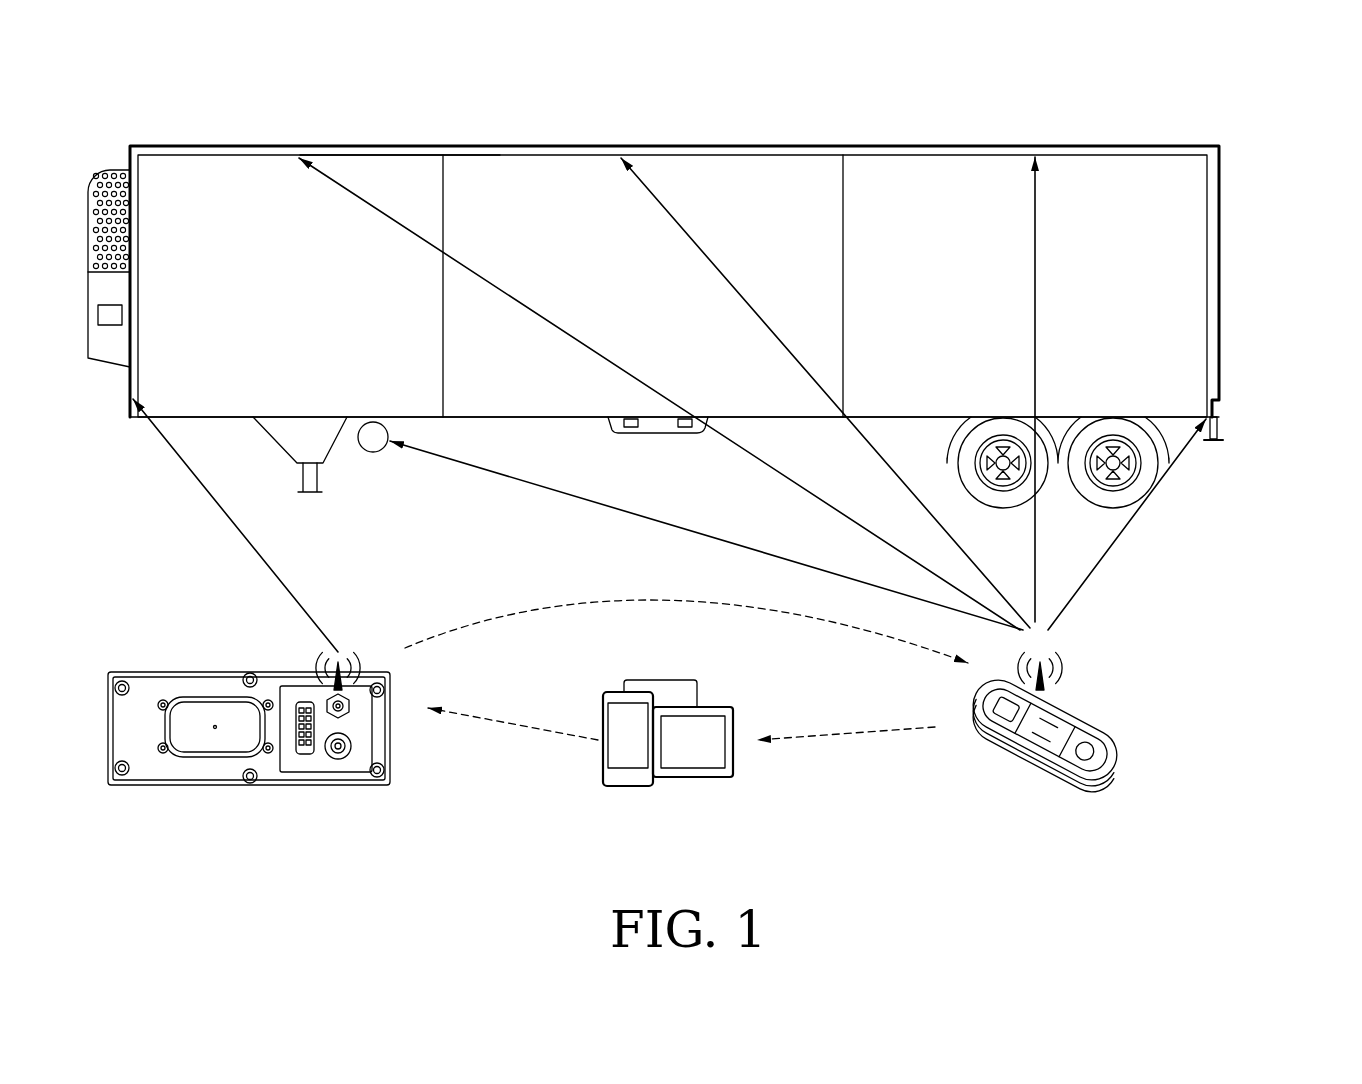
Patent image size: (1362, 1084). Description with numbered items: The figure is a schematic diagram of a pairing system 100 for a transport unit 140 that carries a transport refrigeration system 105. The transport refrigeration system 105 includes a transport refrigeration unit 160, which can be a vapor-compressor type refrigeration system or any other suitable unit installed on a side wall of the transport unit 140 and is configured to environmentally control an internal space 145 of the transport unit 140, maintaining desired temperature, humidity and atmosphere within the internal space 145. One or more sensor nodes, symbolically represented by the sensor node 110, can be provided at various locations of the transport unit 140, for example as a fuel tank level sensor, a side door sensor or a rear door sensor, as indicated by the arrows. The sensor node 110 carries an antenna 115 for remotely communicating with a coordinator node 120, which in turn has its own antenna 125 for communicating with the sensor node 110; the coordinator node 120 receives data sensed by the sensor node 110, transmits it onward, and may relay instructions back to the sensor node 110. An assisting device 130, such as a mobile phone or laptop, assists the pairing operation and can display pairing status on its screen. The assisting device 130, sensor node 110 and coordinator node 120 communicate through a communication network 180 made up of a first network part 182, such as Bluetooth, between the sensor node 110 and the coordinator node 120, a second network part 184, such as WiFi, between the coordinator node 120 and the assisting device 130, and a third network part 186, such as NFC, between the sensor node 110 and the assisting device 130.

The pairing system 100 is at (1280, 98).
The transport refrigeration system 105 is at (661, 124).
The sensor node 110 is at (1125, 732).
The antenna 115 is at (1072, 655).
The coordinator node 120 is at (199, 787).
The antenna 125 is at (360, 650).
The assisting device 130 is at (690, 780).
The transport unit 140 is at (404, 145).
The internal space 145 is at (889, 164).
The transport refrigeration unit 160 is at (116, 170).
The communication network 180 is at (806, 668).
The first network part 182 is at (620, 603).
The second network part 184 is at (505, 738).
The third network part 186 is at (866, 740).